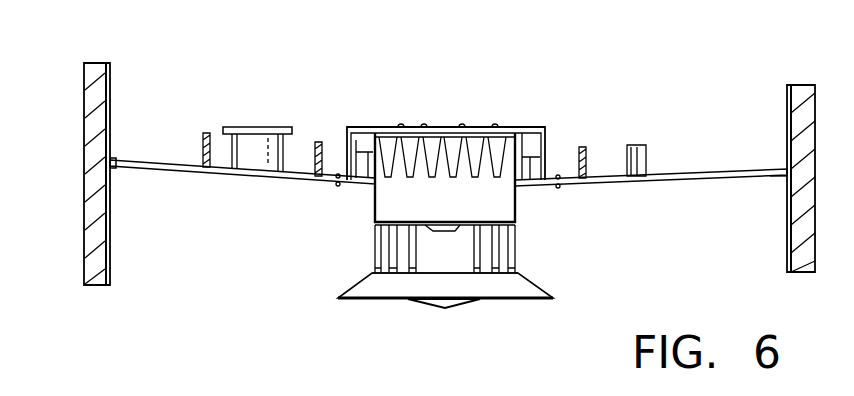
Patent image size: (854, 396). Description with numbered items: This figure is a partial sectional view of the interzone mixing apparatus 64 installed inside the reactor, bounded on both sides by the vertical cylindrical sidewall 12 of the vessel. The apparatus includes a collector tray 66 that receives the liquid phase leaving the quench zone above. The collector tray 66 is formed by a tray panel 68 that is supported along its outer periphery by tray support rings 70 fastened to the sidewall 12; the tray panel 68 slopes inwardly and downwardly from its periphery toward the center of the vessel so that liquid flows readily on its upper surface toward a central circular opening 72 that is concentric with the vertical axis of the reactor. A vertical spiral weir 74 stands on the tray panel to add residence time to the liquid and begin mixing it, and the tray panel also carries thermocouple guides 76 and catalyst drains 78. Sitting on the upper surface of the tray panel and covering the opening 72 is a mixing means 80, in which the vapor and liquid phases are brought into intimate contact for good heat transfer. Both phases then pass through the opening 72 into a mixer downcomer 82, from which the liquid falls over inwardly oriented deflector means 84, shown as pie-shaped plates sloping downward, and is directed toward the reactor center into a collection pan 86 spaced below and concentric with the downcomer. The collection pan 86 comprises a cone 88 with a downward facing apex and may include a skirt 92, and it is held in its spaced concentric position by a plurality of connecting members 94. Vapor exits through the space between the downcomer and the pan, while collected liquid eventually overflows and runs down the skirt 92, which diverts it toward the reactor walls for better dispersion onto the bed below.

The vertical cylindrical sidewall 12 is at (84, 135).
The interzone mixing apparatus 64 is at (593, 62).
The collector tray 66 is at (170, 125).
The tray panel 68 is at (226, 180).
The tray support rings 70 is at (118, 167).
The circular opening 72 is at (546, 192).
The vertical spiral weir 74 is at (208, 133).
The thermocouple guides 76 is at (646, 150).
The catalyst drains 78 is at (278, 127).
The mixing means 80 is at (502, 112).
The mixer downcomer 82 is at (373, 194).
The deflector means 84 is at (428, 227).
The collection pan 86 is at (410, 287).
The cone 88 is at (455, 305).
The skirt 92 is at (543, 293).
The connecting members 94 is at (510, 253).